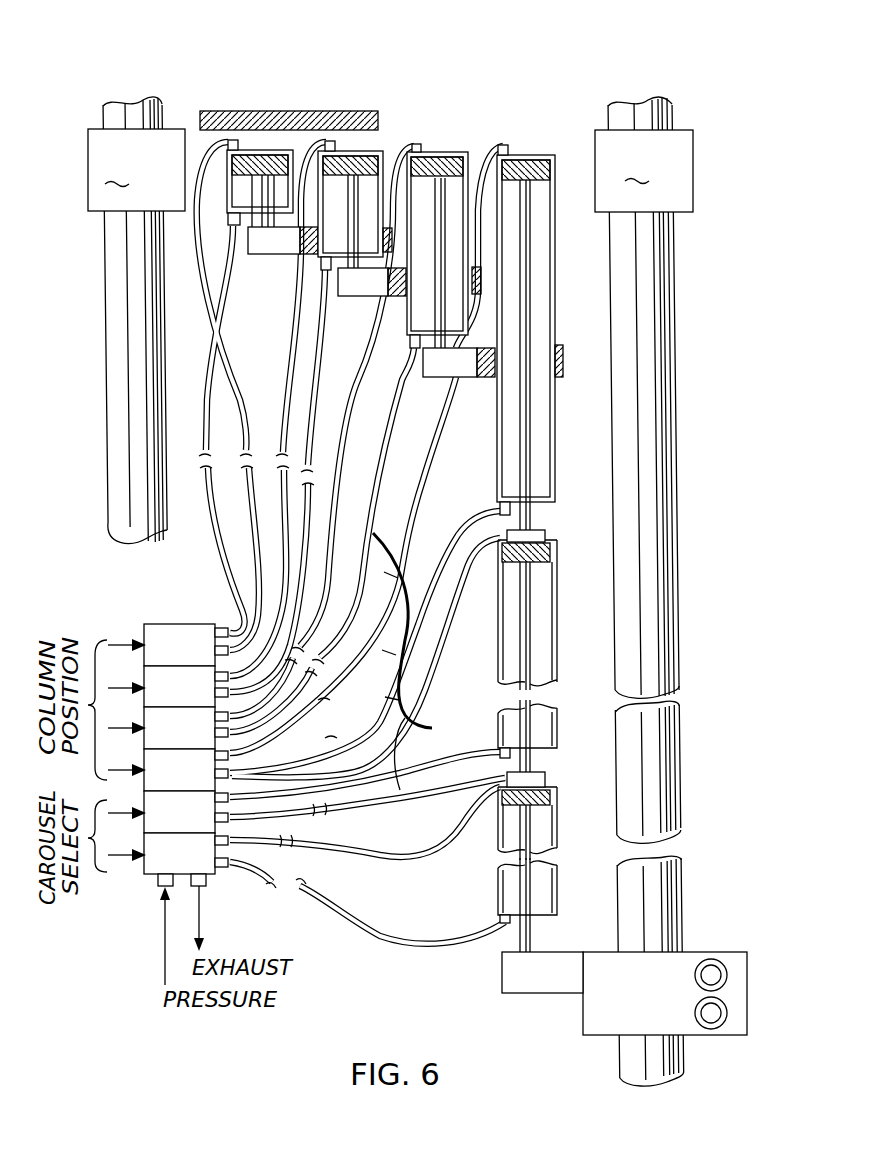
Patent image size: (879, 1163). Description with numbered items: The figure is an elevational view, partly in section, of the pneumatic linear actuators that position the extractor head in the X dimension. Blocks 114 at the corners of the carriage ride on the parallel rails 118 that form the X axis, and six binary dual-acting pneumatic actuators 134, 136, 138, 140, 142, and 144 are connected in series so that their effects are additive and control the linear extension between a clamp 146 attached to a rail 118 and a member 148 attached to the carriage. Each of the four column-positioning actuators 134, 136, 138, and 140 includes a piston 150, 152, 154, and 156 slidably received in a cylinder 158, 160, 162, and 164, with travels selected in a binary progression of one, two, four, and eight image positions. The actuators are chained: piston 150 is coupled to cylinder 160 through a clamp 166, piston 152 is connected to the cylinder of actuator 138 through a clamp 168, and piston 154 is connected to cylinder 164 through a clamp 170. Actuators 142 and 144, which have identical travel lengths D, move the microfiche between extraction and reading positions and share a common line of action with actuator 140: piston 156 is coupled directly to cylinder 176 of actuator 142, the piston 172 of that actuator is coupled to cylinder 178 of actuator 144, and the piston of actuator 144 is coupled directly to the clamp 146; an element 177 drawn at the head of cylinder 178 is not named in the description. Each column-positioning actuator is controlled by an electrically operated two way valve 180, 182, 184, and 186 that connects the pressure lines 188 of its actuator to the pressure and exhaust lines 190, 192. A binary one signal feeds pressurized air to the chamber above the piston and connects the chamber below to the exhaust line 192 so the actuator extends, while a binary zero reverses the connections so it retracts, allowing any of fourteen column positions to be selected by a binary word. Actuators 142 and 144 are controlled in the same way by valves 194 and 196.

The blocks 114 is at (390, 320).
The rails 118 is at (655, 458).
The pneumatic actuator 134 is at (285, 128).
The pneumatic actuator 136 is at (385, 155).
The pneumatic actuator 138 is at (473, 190).
The pneumatic actuator 140 is at (554, 296).
The pneumatic actuator 142 is at (558, 538).
The pneumatic actuator 144 is at (557, 778).
The clamp 146 is at (688, 960).
The member 148 is at (213, 122).
The piston 150 is at (240, 140).
The piston 152 is at (345, 158).
The piston 154 is at (413, 146).
The piston 156 is at (513, 160).
The cylinder 158 is at (289, 165).
The cylinder 160 is at (381, 140).
The cylinder 162 is at (463, 153).
The cylinder 164 is at (551, 168).
The clamp 166 is at (255, 255).
The clamp 168 is at (347, 297).
The clamp 170 is at (463, 378).
The piston 172 is at (552, 553).
The cylinder 176 is at (556, 599).
The piston seal 177 is at (553, 797).
The cylinder 178 is at (559, 814).
The two way valve 180 is at (168, 645).
The two way valve 182 is at (168, 686).
The two way valve 184 is at (168, 728).
The two way valve 186 is at (168, 770).
The pressure lines 188 is at (425, 661).
The pressure line 190 is at (160, 888).
The exhaust line 192 is at (212, 888).
The valve 194 is at (168, 812).
The valve 196 is at (168, 853).